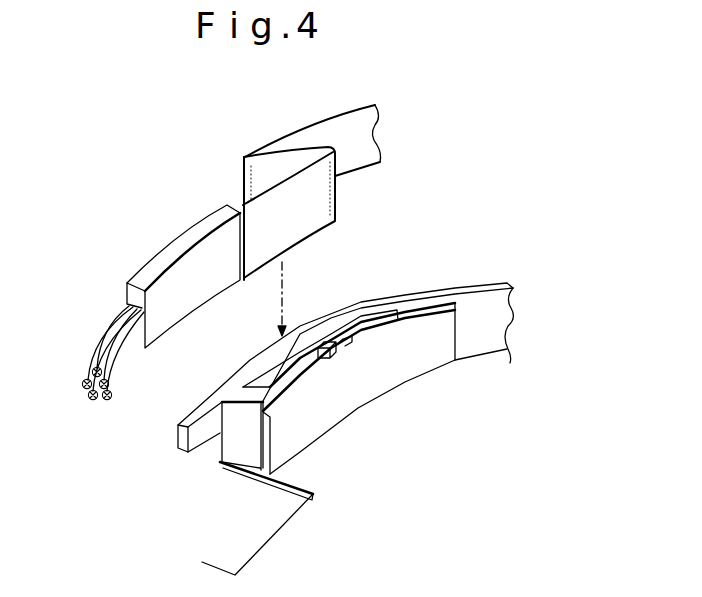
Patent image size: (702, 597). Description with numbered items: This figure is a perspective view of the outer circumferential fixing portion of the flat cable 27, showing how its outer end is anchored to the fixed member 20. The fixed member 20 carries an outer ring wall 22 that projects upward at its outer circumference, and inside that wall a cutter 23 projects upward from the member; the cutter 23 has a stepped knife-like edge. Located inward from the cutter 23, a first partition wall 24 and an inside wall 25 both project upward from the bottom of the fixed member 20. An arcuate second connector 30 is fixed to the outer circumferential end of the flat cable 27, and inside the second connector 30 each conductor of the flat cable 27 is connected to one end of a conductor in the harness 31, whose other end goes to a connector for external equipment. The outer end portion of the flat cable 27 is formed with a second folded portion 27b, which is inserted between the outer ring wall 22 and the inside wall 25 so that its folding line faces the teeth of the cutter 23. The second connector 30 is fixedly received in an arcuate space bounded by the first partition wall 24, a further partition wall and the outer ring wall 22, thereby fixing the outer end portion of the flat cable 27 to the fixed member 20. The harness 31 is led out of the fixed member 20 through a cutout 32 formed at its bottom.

The fixed member 20 is at (512, 296).
The outer ring wall 22 is at (467, 285).
The cutter 23 is at (310, 352).
The first partition wall 24 is at (236, 398).
The inside wall 25 is at (411, 357).
The flat cable 27 is at (283, 139).
The second folded portion 27b is at (242, 187).
The second connector 30 is at (170, 248).
The harness 31 is at (103, 343).
The cutout 32 is at (268, 525).